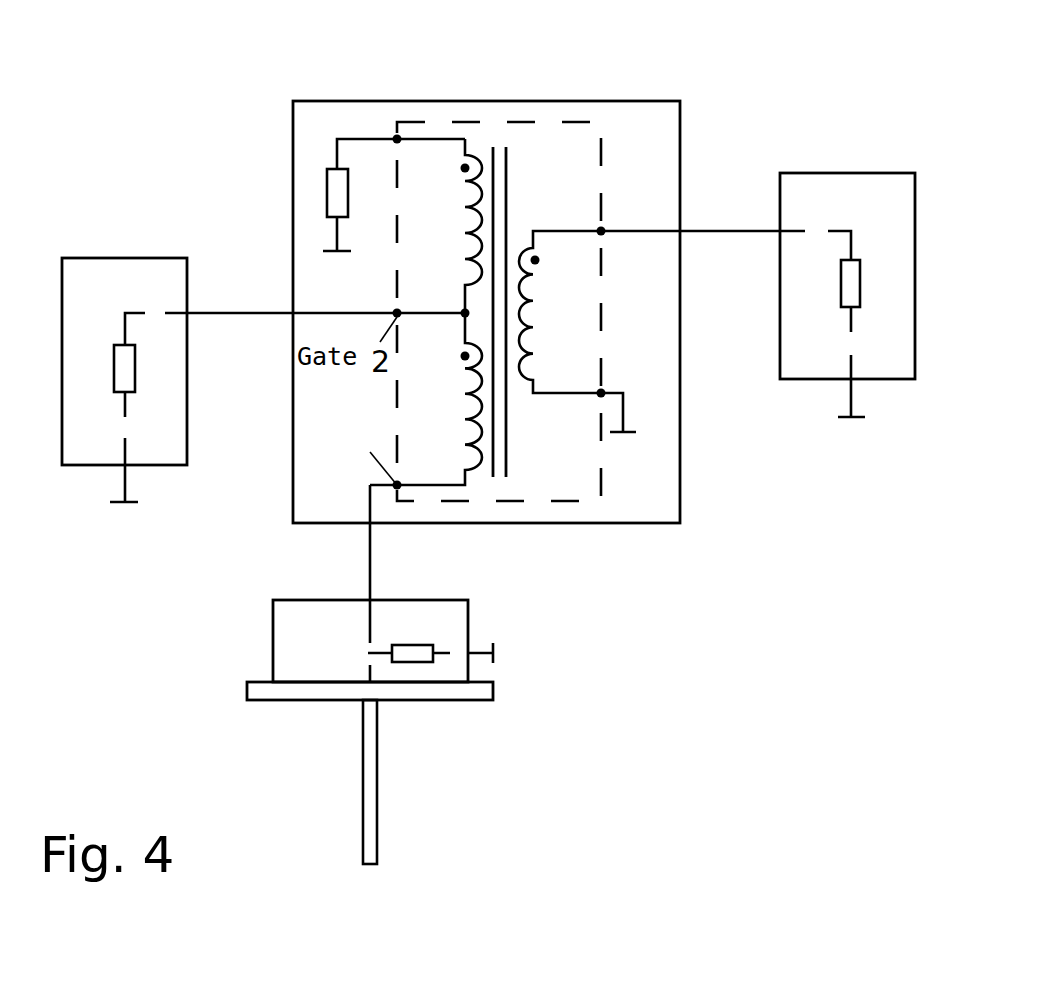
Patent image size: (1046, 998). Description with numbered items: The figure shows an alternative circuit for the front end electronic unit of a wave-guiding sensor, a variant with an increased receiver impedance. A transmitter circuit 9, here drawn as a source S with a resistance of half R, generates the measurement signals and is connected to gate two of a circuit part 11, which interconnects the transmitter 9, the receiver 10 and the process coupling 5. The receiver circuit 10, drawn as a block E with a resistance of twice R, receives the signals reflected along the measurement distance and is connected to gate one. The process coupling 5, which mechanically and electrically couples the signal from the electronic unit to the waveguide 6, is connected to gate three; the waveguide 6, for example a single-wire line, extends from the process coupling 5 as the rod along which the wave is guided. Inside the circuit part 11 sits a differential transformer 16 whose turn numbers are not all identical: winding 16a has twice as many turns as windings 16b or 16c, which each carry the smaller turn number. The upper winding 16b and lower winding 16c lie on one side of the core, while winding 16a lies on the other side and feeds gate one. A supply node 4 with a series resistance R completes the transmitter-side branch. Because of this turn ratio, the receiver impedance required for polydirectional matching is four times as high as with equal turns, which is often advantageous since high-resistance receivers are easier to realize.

The connection node / supply terminal 4 is at (397, 139).
The process coupling 5 is at (273, 612).
The waveguide 6 is at (377, 790).
The transmitter circuit 9 is at (85, 258).
The receiver circuit 10 is at (892, 172).
The circuit part 11 is at (293, 145).
The differential transformer 16 is at (601, 148).
The winding 16a is at (538, 337).
The winding 16b is at (467, 244).
The winding 16c is at (467, 379).